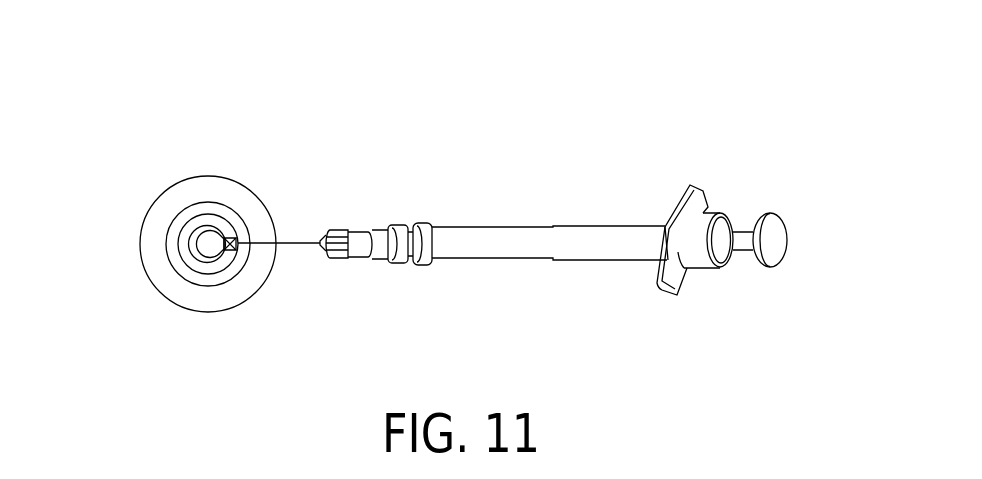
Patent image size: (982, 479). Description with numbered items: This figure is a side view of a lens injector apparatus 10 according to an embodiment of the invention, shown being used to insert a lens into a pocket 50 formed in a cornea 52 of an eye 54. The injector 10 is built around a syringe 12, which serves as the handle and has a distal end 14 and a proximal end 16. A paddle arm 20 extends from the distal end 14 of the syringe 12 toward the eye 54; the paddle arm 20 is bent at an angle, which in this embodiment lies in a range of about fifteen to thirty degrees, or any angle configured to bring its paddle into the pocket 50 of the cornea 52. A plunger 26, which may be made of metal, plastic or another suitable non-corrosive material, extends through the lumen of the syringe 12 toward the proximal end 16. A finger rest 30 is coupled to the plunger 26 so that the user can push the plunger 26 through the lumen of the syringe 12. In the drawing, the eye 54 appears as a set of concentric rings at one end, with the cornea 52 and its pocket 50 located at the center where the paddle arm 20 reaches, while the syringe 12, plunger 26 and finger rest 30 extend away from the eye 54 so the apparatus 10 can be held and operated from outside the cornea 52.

The lens injector apparatus 10 is at (489, 171).
The syringe 12 is at (601, 226).
The distal end 14 is at (347, 228).
The proximal end 16 is at (663, 224).
The paddle arm 20 is at (293, 242).
The plunger 26 is at (747, 254).
The finger rest 30 is at (773, 235).
The pocket 50 is at (230, 233).
The cornea 52 is at (205, 242).
The eye 54 is at (168, 231).